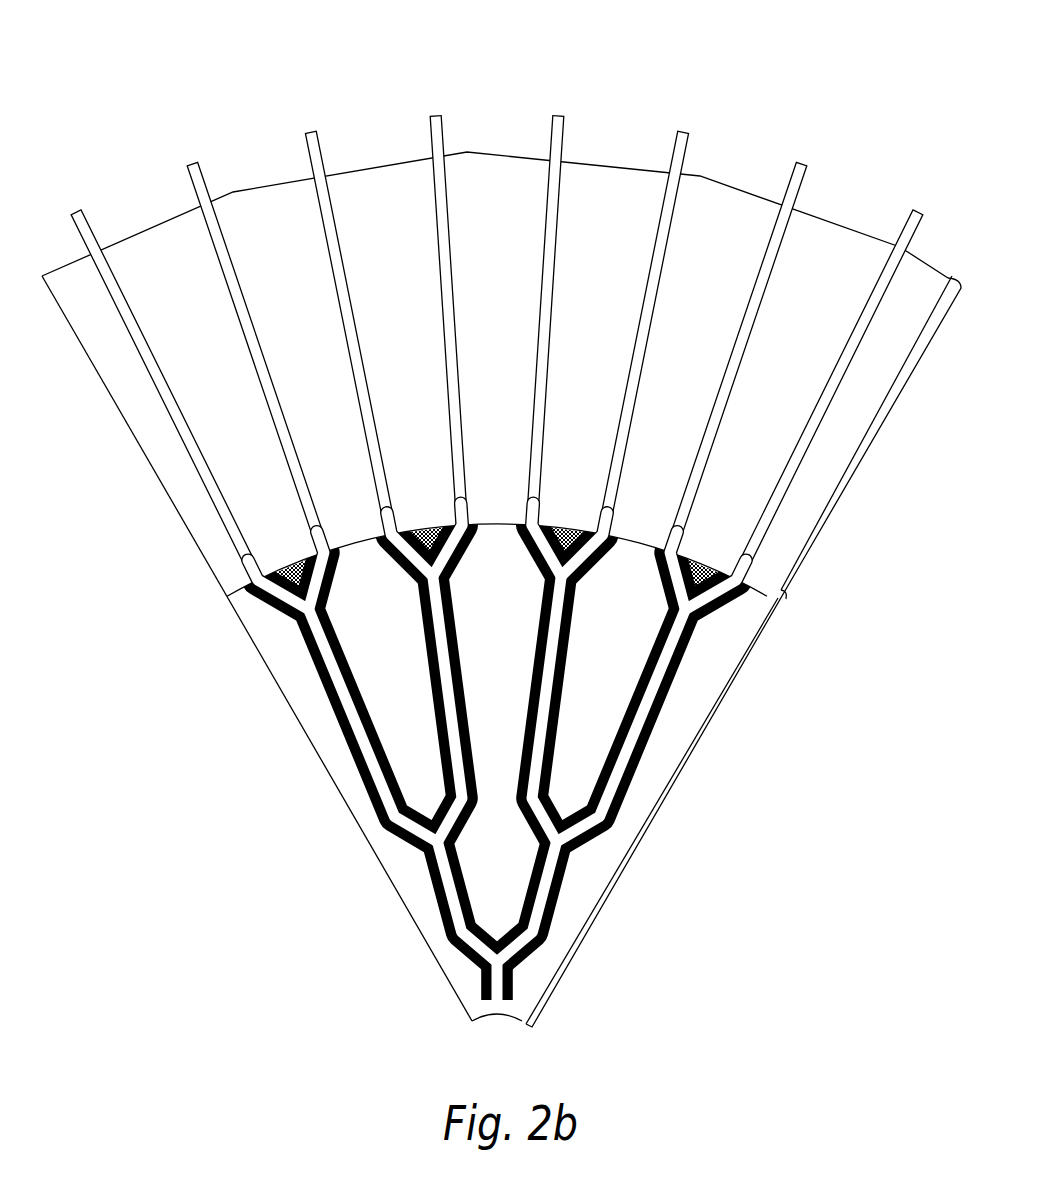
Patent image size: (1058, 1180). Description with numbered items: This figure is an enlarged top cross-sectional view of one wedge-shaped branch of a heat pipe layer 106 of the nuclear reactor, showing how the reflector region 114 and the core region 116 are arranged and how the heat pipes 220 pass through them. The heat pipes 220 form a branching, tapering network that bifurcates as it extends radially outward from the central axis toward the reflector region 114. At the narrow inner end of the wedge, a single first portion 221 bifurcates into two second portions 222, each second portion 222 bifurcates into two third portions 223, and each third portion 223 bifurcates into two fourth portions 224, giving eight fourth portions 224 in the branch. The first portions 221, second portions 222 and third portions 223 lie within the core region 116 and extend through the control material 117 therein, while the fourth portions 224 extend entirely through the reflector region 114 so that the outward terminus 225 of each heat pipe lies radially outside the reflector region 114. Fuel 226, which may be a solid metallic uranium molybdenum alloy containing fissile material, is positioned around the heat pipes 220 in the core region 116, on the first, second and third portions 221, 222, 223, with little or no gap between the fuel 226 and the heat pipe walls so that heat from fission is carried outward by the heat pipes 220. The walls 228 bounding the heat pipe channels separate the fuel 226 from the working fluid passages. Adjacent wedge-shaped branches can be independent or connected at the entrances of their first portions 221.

The heat pipe layer 106 is at (138, 132).
The reflector region 114 is at (870, 442).
The core region 116 is at (660, 812).
The control material 117 is at (245, 608).
The heat pipes 220 is at (165, 410).
The first portions 221 is at (487, 987).
The second portions 222 is at (548, 872).
The third portions 223 is at (450, 693).
The fourth portions 224 is at (298, 468).
The outward terminus 225 is at (432, 120).
The fuel 226 is at (387, 777).
The junction wall 228 is at (328, 640).